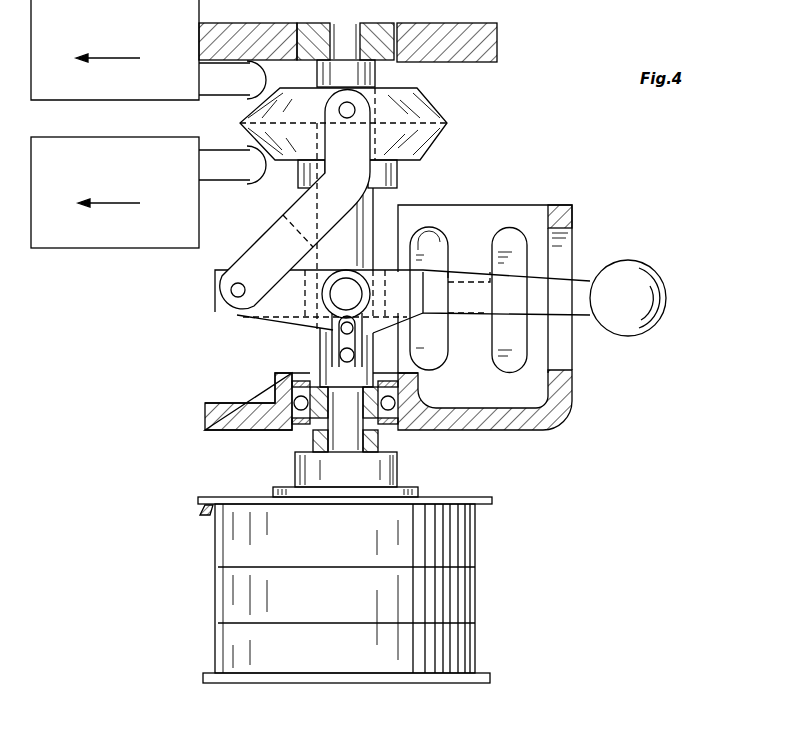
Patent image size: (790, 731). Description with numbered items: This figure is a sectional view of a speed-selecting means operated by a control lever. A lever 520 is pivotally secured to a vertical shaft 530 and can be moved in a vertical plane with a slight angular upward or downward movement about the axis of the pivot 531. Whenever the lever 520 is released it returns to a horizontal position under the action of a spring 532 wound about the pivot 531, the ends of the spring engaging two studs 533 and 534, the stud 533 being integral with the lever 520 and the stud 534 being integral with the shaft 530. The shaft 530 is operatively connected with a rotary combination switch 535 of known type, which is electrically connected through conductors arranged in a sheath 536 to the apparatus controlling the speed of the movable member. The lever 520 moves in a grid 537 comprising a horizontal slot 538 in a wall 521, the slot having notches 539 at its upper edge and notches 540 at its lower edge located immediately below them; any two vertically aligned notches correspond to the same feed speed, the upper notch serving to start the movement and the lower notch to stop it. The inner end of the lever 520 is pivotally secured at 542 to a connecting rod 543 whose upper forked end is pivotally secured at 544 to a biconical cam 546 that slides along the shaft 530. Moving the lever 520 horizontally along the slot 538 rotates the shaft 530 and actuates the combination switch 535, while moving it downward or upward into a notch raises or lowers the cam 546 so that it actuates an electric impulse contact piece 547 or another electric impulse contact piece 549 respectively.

The lever 520 is at (548, 292).
The wall 521 is at (575, 215).
The vertical shaft 530 is at (358, 212).
The pivot 531 is at (346, 296).
The spring 532 is at (340, 355).
The stud 533 is at (337, 327).
The stud 534 is at (367, 363).
The rotary combination switch 535 is at (457, 565).
The sheath 536 is at (211, 512).
The grid 537 is at (575, 390).
The horizontal slot 538 is at (461, 292).
The notches 539 is at (423, 240).
The notches 540 is at (425, 365).
The pivot 542 is at (231, 290).
The connecting rod 543 is at (260, 247).
The pivot 544 is at (355, 107).
The cam 546 is at (417, 121).
The electric impulse contact piece 547 is at (170, 88).
The electric impulse contact piece 549 is at (147, 238).